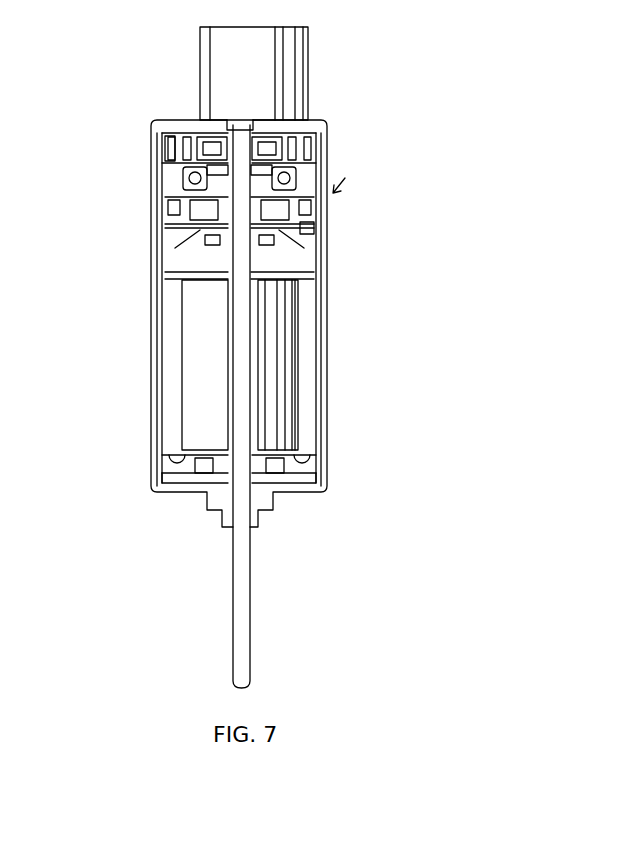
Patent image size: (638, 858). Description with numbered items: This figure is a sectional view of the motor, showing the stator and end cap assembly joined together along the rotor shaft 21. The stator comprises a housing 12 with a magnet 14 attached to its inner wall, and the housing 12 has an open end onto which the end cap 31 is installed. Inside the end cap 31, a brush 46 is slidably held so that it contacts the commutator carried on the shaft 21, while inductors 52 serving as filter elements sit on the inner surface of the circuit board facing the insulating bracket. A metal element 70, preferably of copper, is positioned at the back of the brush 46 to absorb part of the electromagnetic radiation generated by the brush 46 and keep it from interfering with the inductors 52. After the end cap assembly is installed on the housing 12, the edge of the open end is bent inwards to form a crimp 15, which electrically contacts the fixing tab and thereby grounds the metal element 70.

The end cap 31 is at (330, 118).
The crimp 15 is at (332, 170).
The inductor 52 is at (158, 142).
The metal element 70 is at (187, 232).
The brush 46 is at (325, 265).
The shaft 21 is at (240, 375).
The housing 12 is at (318, 356).
The magnet 14 is at (306, 410).